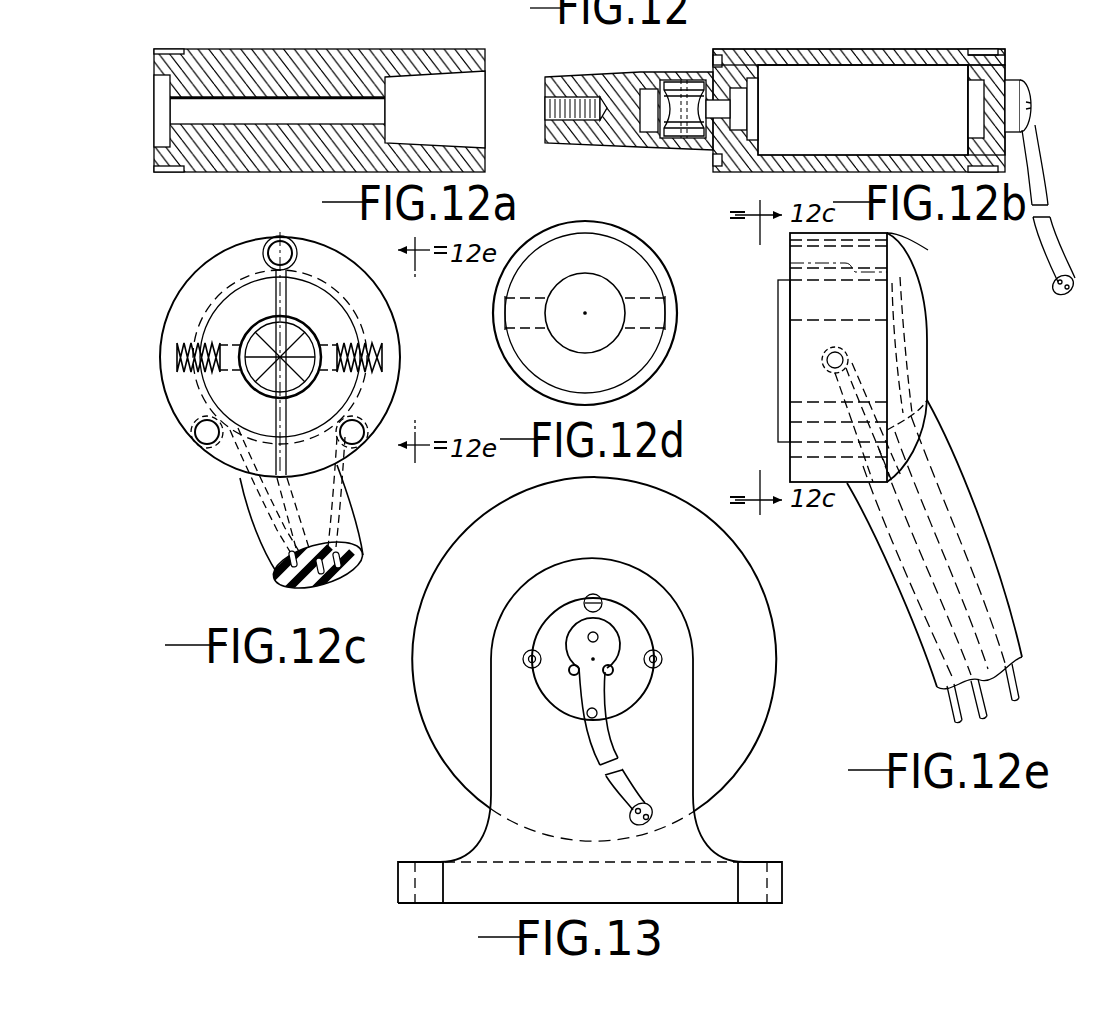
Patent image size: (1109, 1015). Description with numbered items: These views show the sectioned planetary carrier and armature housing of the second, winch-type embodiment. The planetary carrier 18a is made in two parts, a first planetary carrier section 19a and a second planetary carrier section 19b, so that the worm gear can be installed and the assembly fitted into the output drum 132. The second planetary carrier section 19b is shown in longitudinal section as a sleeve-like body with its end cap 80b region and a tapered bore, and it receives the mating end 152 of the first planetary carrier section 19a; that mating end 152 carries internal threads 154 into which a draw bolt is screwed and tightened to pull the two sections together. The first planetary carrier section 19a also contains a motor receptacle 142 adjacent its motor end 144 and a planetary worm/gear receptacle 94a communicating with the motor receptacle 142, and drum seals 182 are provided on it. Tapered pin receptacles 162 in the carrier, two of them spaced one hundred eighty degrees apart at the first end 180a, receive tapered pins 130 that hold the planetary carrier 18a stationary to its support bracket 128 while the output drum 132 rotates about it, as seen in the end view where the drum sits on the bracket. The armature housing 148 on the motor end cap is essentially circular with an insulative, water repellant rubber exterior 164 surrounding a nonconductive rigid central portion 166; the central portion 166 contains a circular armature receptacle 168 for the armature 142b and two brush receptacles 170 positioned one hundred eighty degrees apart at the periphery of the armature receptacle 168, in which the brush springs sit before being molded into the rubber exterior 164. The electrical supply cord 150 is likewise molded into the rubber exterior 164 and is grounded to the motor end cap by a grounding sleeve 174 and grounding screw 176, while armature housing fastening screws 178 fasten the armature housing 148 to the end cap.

In FIG. 12A, the second planetary carrier section 19b is at (305, 160).
In FIG. 12A, the end cap 80b is at (156, 74).
In FIG. 12A, the mating end 152 is at (175, 52).
In FIG. 12B, the mating end 152 is at (585, 145).
In FIG. 12A, the tapered pin receptacles 162 is at (172, 170).
In FIG. 12B, the tapered pin receptacles 162 is at (985, 52).
In FIG. 12B, the internal threads 154 is at (580, 100).
In FIG. 12B, the planetary worm/gear receptacle 94a is at (660, 112).
In FIG. 12B, the first planetary carrier section 19a is at (840, 165).
In FIG. 12B, the motor receptacle 142 is at (822, 88).
In FIG. 12B, the planetary carrier 18a is at (880, 50).
In FIG. 12B, the motor end 144 is at (1000, 55).
In FIG. 12B, the first end 180a is at (1005, 62).
In FIG. 13, the first end 180a is at (552, 632).
In FIG. 12B, the armature housing 148 is at (1028, 100).
In FIG. 12E, the armature housing 148 is at (930, 328).
In FIG. 12B, the grounding screw 176 is at (1031, 106).
In FIG. 13, the grounding screw 176 is at (602, 636).
In FIG. 12C, the rubber exterior 164 is at (388, 366).
In FIG. 12E, the rubber exterior 164 is at (920, 370).
In FIG. 12C, the central portion 166 is at (325, 393).
In FIG. 12D, the central portion 166 is at (612, 256).
In FIG. 12E, the central portion 166 is at (778, 430).
In FIG. 12C, the armature receptacle 168 is at (303, 350).
In FIG. 12D, the armature receptacle 168 is at (615, 290).
In FIG. 12C, the armature 142b is at (318, 340).
In FIG. 12C, the brush receptacles 170 is at (236, 345).
In FIG. 12D, the brush receptacles 170 is at (670, 298).
In FIG. 12E, the brush receptacles 170 is at (822, 360).
In FIG. 12C, the grounding sleeve 174 is at (276, 243).
In FIG. 12E, the grounding sleeve 174 is at (888, 268).
In FIG. 12E, the electrical supply cord 150 is at (992, 532).
In FIG. 13, the electrical supply cord 150 is at (596, 742).
In FIG. 13, the output drum 132 is at (752, 712).
In FIG. 13, the support bracket 128 is at (705, 835).
In FIG. 13, the tapered pins 130 is at (525, 661).
In FIG. 13, the drum seals 182 is at (594, 596).
In FIG. 13, the armature housing fastening screws 178 is at (578, 688).